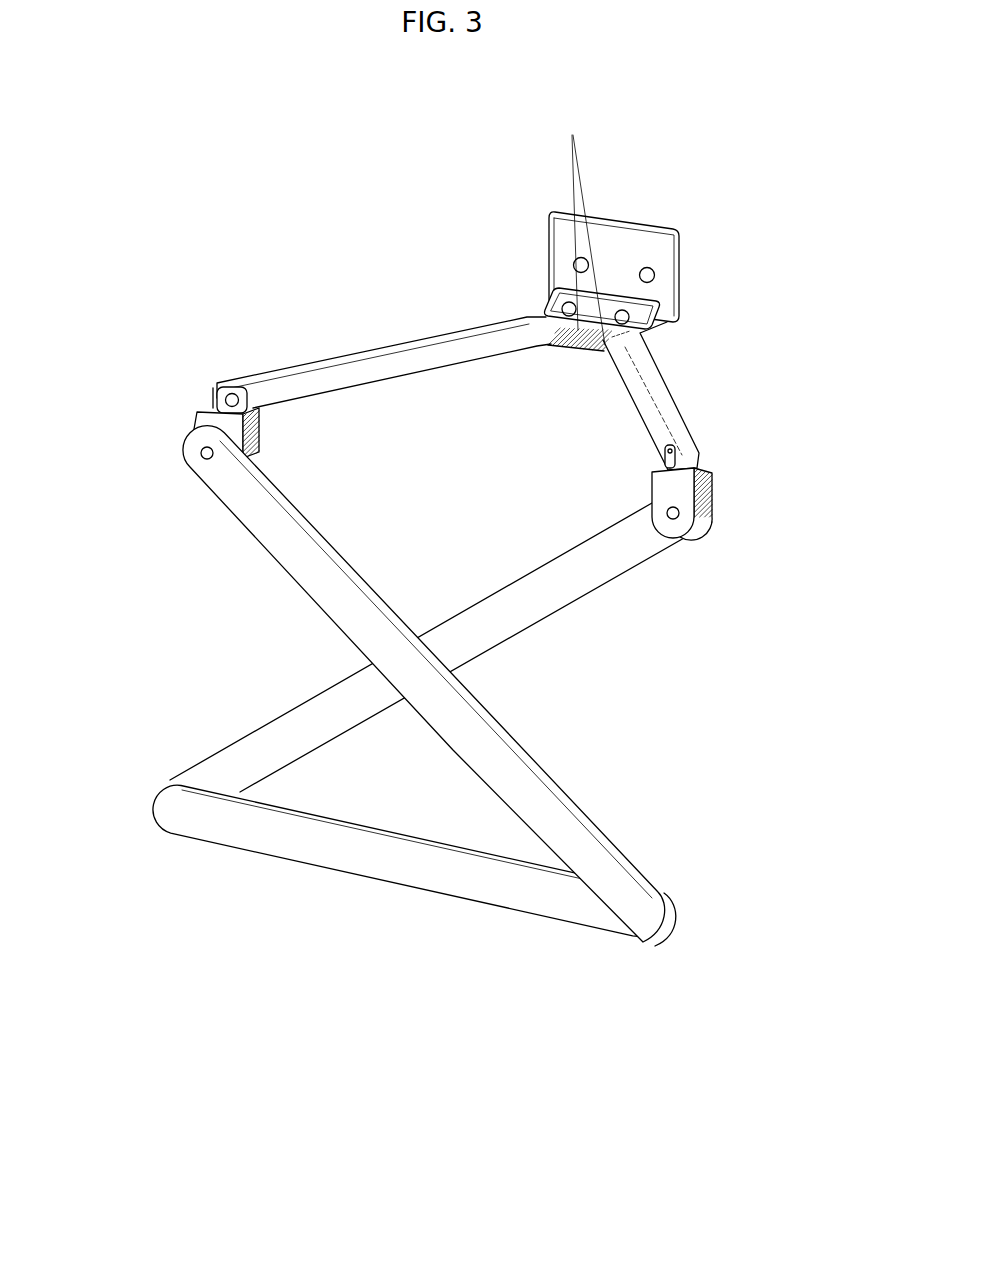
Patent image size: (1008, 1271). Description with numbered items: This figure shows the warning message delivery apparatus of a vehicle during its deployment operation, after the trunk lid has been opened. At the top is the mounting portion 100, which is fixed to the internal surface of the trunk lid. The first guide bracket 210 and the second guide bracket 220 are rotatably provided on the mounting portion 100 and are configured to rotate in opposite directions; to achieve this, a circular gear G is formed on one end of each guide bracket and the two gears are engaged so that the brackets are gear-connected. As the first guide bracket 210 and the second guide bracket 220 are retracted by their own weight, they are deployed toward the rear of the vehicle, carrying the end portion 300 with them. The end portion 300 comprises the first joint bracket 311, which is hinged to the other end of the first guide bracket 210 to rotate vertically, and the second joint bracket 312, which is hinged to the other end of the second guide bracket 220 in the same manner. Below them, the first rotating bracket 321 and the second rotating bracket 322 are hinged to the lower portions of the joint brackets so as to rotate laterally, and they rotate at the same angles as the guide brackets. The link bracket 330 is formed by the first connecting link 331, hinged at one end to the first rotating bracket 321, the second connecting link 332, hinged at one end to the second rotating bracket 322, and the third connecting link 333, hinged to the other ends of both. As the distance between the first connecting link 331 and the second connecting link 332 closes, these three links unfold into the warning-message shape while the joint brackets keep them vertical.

The mounting portion 100 is at (686, 226).
The circular gear G is at (584, 224).
The first guide bracket 210 is at (402, 355).
The second guide bracket 220 is at (654, 385).
The first joint bracket 311 is at (213, 382).
The second joint bracket 312 is at (681, 452).
The first rotating bracket 321 is at (193, 420).
The second rotating bracket 322 is at (712, 520).
The end portion 300 is at (456, 732).
The link bracket 330 is at (432, 761).
The first connecting link 331 is at (197, 990).
The second connecting link 332 is at (287, 737).
The third connecting link 333 is at (403, 863).